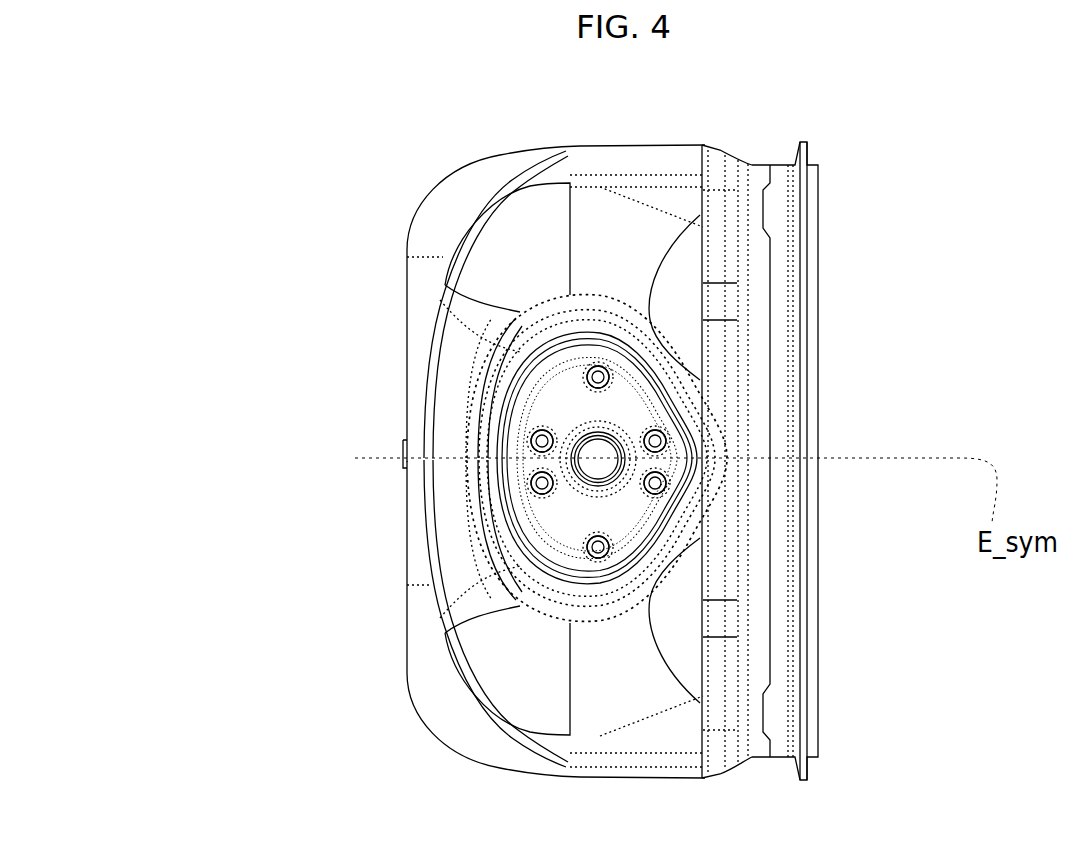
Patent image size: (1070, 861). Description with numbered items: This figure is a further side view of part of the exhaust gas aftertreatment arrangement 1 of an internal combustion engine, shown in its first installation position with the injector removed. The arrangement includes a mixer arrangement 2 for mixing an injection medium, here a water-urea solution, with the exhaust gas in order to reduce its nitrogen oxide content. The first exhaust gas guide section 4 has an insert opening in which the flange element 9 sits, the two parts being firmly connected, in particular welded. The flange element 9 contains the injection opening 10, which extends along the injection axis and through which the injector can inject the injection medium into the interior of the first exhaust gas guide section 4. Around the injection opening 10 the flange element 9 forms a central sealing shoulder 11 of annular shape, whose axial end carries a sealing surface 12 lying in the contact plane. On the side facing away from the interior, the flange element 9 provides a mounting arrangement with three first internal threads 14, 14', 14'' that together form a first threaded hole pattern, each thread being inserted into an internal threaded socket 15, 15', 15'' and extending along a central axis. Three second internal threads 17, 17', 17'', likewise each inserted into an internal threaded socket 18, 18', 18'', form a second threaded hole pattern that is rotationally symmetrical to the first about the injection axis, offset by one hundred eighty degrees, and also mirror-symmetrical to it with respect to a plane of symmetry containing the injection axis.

The exhaust gas aftertreatment arrangement 1 is at (168, 200).
The mixer arrangement 2 is at (839, 199).
The first exhaust gas guide section 4 is at (537, 147).
The flange element 9 is at (520, 378).
The injection opening 10 is at (600, 477).
The sealing shoulder 11 is at (522, 320).
The sealing surface 12 is at (597, 458).
The first internal thread 14 is at (554, 691).
The internal threaded socket 15 is at (598, 547).
The first internal thread 14' is at (417, 427).
The internal threaded socket 15' is at (542, 441).
The first internal thread 14'' is at (795, 422).
The internal threaded socket 15'' is at (655, 441).
The second internal thread 17 is at (468, 263).
The internal threaded socket 18 is at (598, 377).
The second internal thread 17' is at (783, 509).
The internal threaded socket 18' is at (655, 483).
The second internal thread 17'' is at (417, 508).
The internal threaded socket 18'' is at (542, 483).